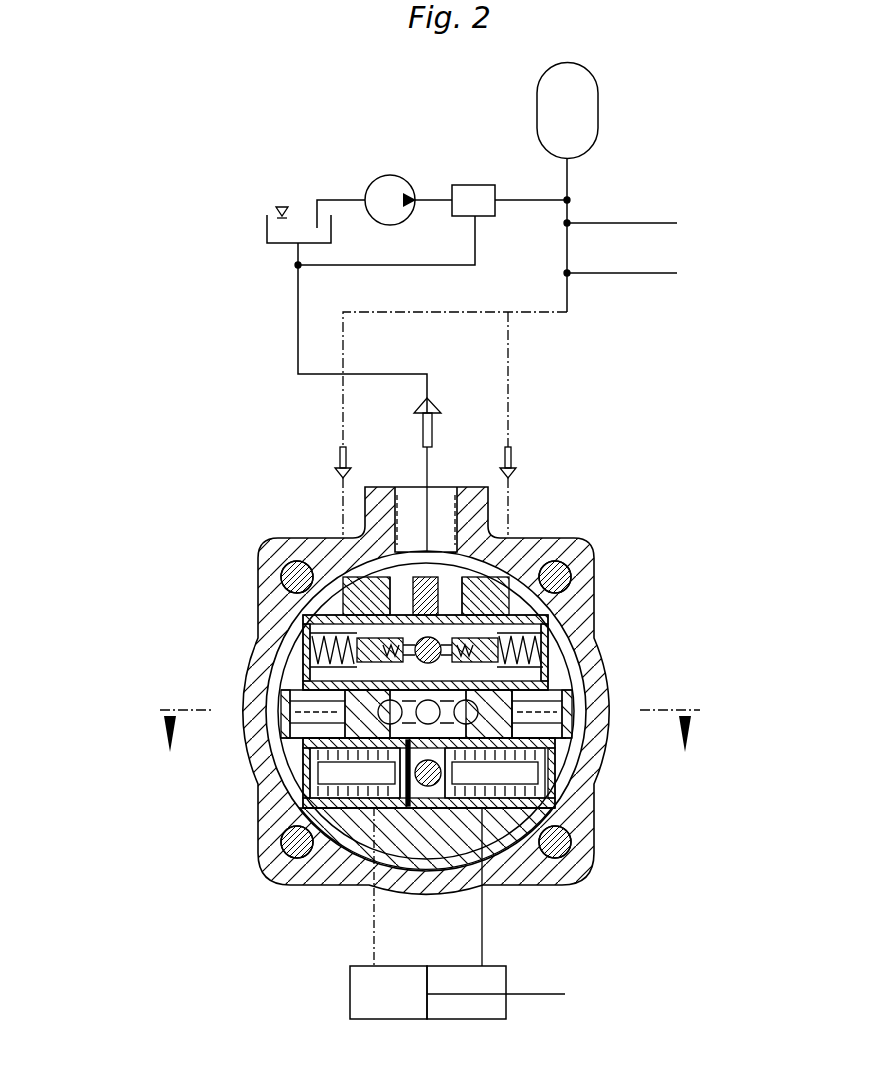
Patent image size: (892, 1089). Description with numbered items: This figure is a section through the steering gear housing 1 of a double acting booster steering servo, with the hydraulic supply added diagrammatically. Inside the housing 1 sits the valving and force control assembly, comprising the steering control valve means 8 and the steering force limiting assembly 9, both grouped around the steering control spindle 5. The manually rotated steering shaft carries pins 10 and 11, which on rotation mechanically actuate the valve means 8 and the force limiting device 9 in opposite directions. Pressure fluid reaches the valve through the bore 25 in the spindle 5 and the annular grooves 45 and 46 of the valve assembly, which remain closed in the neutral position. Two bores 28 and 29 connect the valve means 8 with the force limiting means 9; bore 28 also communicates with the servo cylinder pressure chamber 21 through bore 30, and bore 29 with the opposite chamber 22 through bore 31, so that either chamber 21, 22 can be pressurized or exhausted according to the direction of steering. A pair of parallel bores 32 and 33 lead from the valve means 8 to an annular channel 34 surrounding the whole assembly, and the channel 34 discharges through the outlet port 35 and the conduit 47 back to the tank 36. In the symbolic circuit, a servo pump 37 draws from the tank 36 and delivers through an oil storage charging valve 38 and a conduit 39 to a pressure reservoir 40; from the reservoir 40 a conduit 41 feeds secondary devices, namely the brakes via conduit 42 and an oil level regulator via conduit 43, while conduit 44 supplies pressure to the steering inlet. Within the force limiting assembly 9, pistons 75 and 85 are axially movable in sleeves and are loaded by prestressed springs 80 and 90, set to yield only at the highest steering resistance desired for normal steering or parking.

The steering gear housing 1 is at (325, 868).
The steering control spindle 5 is at (305, 836).
The steering control valve means 8 is at (218, 609).
The steering force limiting assembly 9 is at (228, 781).
The pin 10 is at (525, 625).
The pin 11 is at (318, 788).
The pressure chamber 21 is at (485, 1007).
The pressure chamber 22 is at (395, 994).
The bore 25 is at (547, 745).
The bore 28 is at (560, 700).
The bore 29 is at (330, 686).
The bore 30 is at (520, 655).
The bore 31 is at (325, 702).
The bore 32 is at (385, 620).
The bore 33 is at (450, 593).
The annular channel 34 is at (395, 568).
The outlet port 35 is at (432, 528).
The tank 36 is at (300, 232).
The servo pump 37 is at (386, 195).
The oil storage charging valve 38 is at (468, 196).
The conduit 39 is at (541, 203).
The pressure reservoir 40 is at (577, 112).
The conduit 41 is at (569, 250).
The conduit 42 is at (636, 217).
The conduit 43 is at (636, 267).
The conduit 44 is at (367, 300).
The annular groove 45 is at (345, 642).
The annular groove 46 is at (478, 627).
The conduit 47 is at (296, 332).
The piston 75 is at (565, 835).
The spring 80 is at (552, 782).
The piston 85 is at (572, 858).
The spring 90 is at (320, 801).